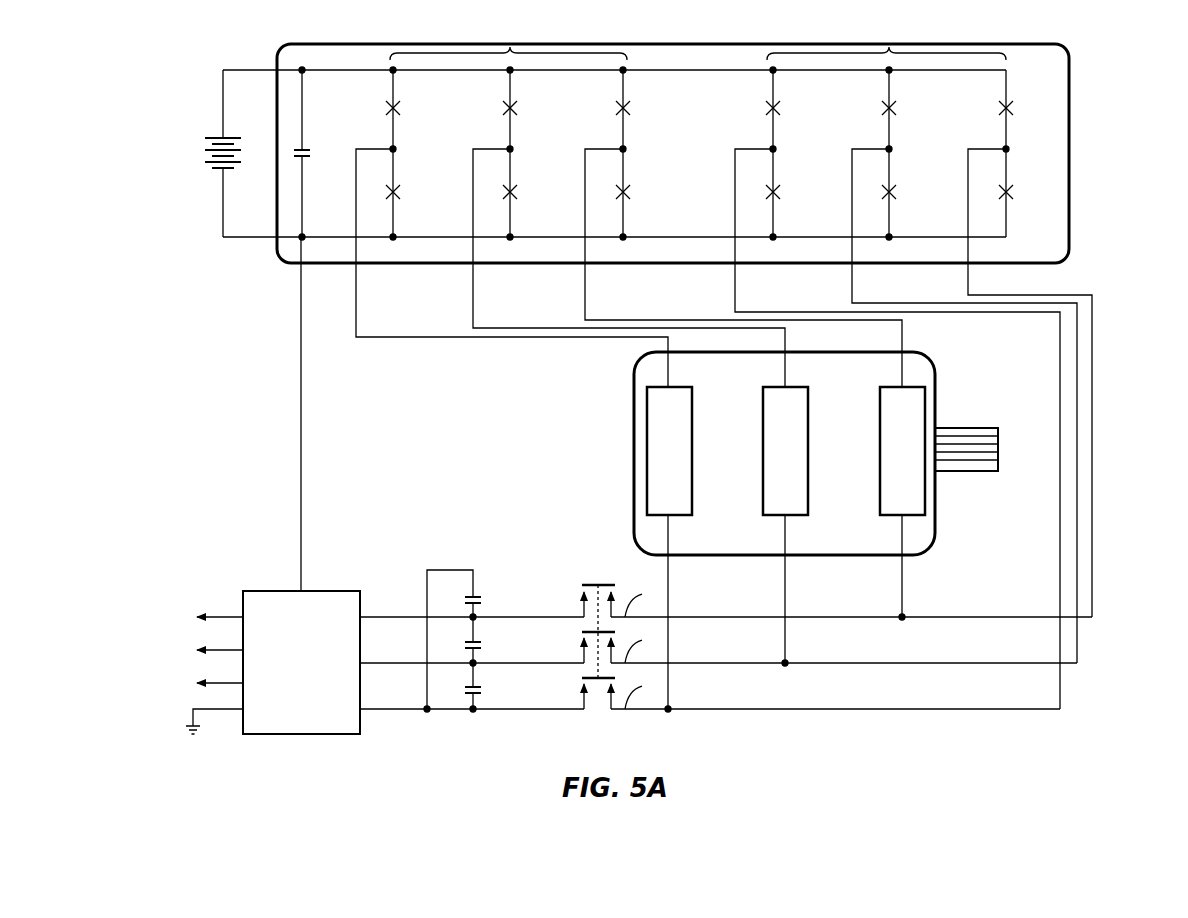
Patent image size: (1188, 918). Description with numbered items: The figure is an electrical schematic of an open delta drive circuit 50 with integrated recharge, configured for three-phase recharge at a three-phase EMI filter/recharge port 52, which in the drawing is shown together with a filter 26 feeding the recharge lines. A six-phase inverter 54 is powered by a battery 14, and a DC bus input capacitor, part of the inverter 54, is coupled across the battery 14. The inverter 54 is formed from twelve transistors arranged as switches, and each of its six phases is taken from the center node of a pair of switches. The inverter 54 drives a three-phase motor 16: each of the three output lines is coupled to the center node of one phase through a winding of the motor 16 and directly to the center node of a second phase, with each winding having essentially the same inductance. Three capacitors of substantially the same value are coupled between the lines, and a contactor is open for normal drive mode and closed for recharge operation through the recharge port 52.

The battery 14 is at (205, 121).
The three-phase motor 16 is at (937, 406).
The filter 26 is at (268, 591).
The open delta drive circuit 50 is at (1120, 61).
The EMI filter/recharge port 52 is at (150, 710).
The six-phase inverter 54 is at (1070, 152).